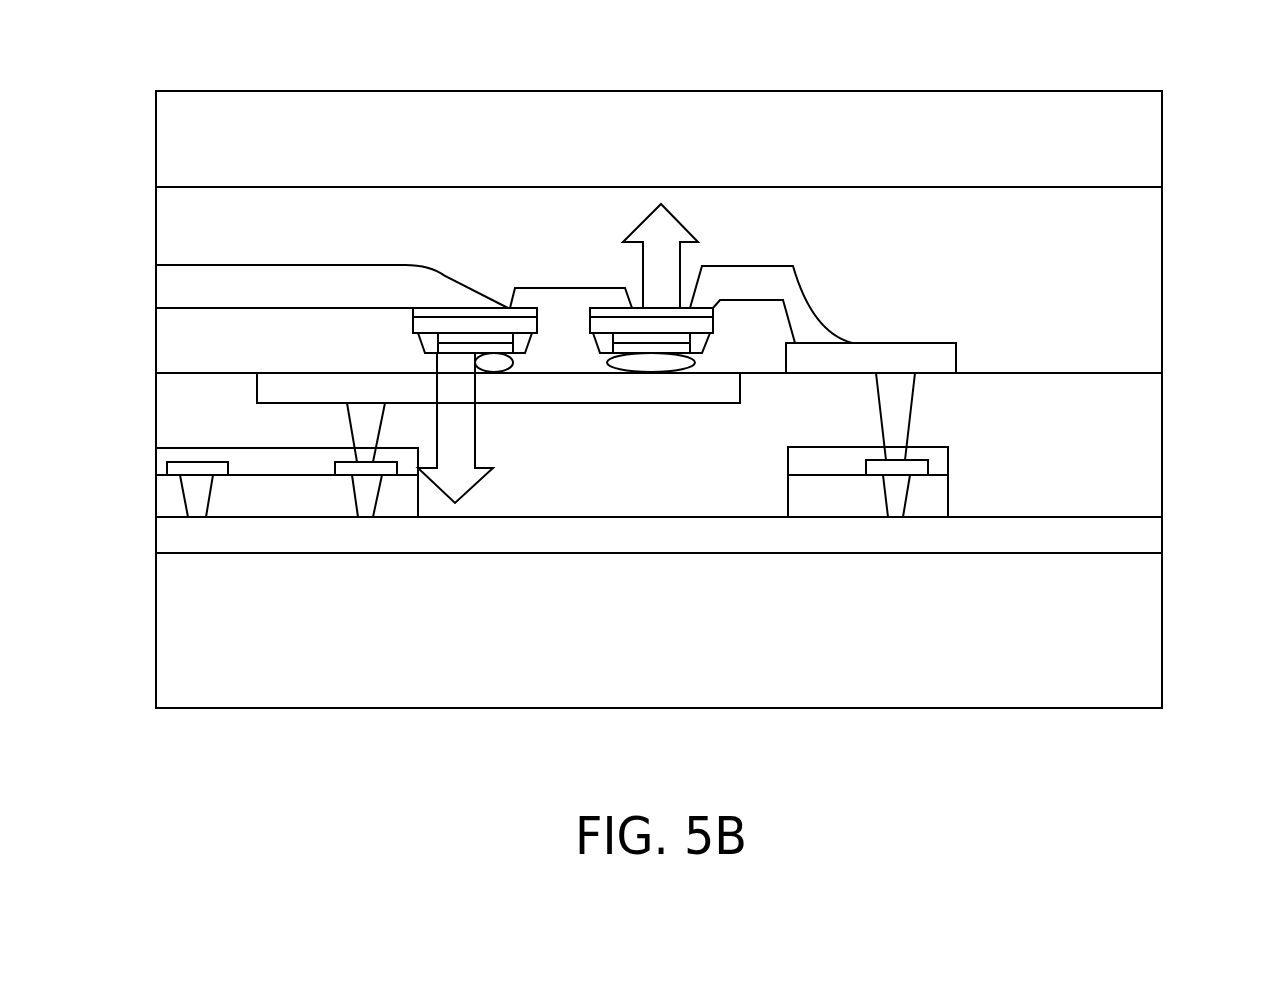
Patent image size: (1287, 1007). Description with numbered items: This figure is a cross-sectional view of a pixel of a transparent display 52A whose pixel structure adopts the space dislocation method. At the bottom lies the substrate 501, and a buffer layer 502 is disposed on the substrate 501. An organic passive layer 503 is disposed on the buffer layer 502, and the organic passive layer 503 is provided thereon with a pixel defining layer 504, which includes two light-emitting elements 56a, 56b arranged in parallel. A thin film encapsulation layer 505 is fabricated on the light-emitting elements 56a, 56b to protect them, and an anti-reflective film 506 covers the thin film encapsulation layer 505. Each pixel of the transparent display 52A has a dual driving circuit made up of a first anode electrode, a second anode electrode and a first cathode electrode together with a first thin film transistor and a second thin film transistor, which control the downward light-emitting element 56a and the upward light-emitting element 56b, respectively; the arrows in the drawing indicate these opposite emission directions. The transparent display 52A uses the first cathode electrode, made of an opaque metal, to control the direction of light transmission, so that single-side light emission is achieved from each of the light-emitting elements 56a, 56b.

The substrate 501 is at (1132, 632).
The buffer layer 502 is at (1132, 536).
The organic passive layer 503 is at (1133, 451).
The pixel defining layer 504 is at (180, 342).
The thin film encapsulation layer 505 is at (1133, 285).
The anti-reflective film 506 is at (1133, 138).
The light-emitting element 56a is at (468, 325).
The light-emitting element 56b is at (608, 322).
The transparent display 52A is at (1274, 773).